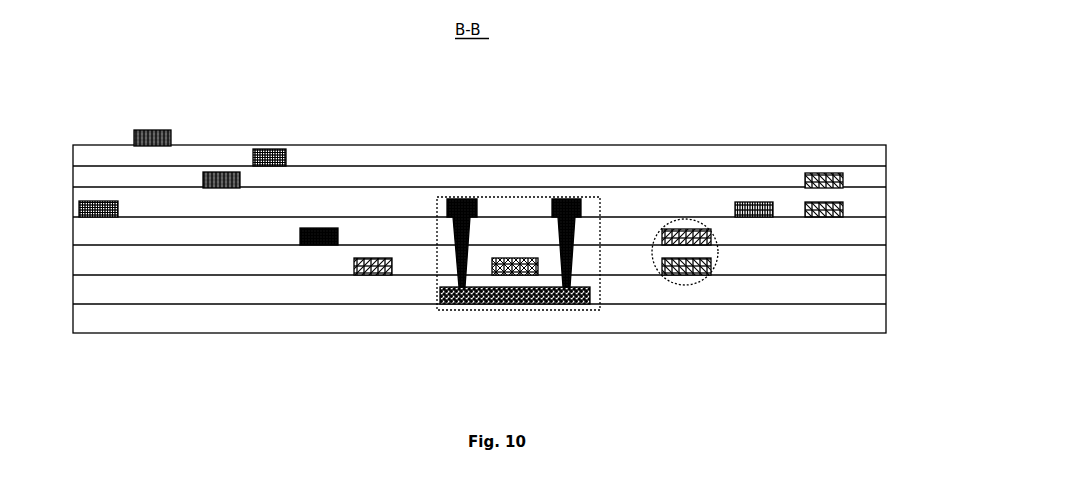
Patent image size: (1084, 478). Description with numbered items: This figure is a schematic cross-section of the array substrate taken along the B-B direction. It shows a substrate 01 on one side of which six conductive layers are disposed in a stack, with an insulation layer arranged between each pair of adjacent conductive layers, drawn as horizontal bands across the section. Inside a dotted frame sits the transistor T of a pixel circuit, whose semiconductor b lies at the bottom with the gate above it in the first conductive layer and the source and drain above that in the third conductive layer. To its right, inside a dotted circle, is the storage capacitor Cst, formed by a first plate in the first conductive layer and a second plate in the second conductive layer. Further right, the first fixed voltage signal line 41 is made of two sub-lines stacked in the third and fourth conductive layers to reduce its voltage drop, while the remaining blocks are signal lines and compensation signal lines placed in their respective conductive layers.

The substrate 01 is at (862, 318).
The transistor T is at (597, 312).
The semiconductor b is at (483, 292).
The storage capacitor Cst is at (715, 268).
The first fixed voltage signal line 41 is at (828, 137).